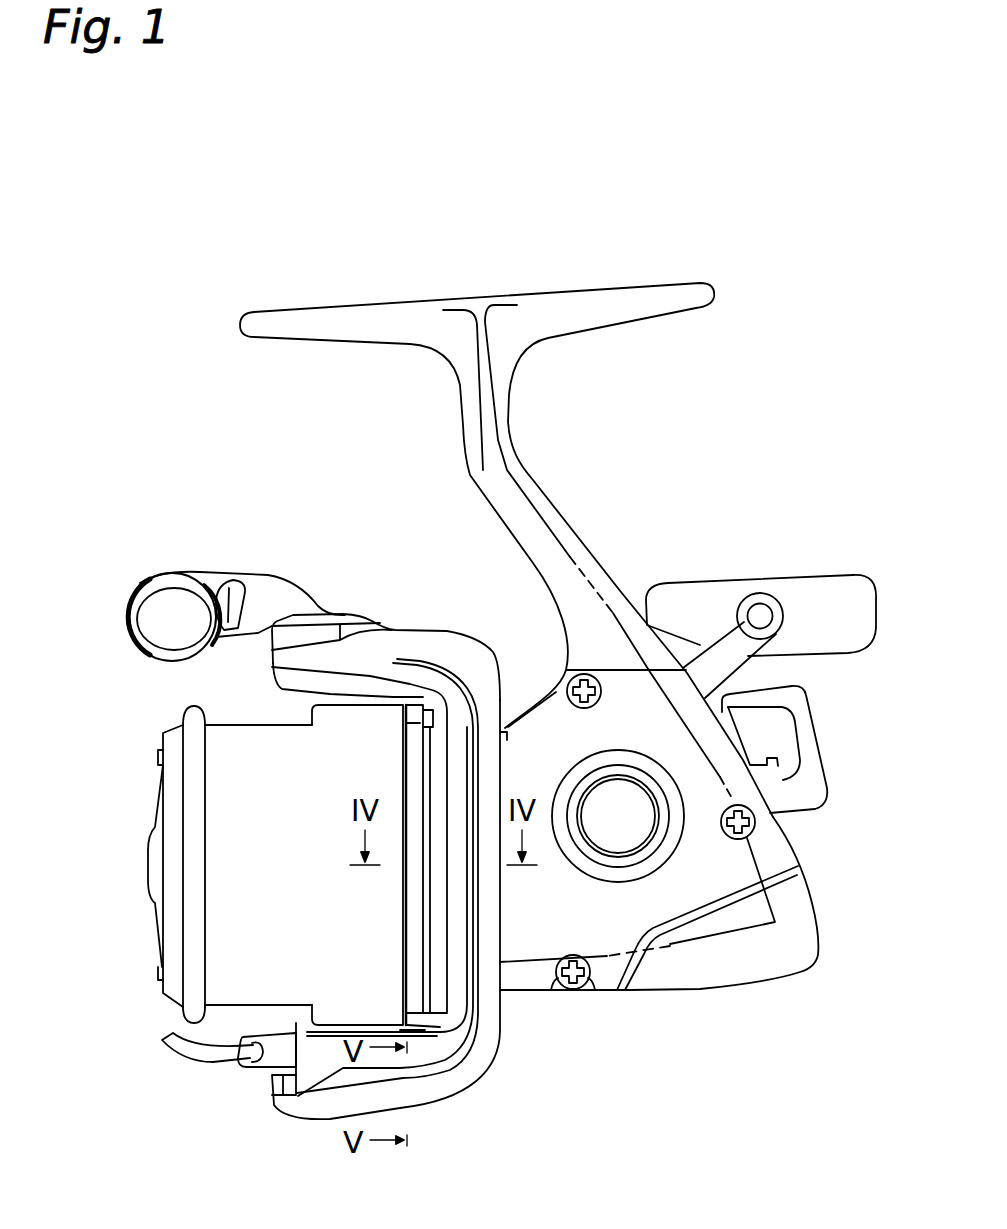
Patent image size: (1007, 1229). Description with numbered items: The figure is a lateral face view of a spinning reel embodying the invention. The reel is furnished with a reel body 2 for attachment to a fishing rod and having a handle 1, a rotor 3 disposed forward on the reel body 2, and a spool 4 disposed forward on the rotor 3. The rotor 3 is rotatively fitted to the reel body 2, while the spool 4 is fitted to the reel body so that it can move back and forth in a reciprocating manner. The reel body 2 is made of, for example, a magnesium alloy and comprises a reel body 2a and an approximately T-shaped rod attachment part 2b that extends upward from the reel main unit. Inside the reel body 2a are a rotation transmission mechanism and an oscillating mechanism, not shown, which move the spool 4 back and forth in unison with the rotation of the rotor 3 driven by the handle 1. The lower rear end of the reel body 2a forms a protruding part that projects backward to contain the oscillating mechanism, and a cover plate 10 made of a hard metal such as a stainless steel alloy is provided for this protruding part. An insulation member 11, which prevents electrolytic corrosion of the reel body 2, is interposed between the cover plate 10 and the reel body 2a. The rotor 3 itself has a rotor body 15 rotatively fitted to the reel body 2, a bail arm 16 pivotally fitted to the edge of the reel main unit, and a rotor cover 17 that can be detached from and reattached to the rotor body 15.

The handle 1 is at (740, 578).
The reel body 2 is at (757, 845).
The reel body 2a is at (787, 845).
The rod attachment part 2b is at (540, 488).
The rotor 3 is at (417, 846).
The spool 4 is at (227, 990).
The cover plate 10 is at (800, 948).
The insulation member 11 is at (617, 992).
The rotor body 15 is at (408, 664).
The bail arm 16 is at (270, 591).
The rotor cover 17 is at (450, 651).